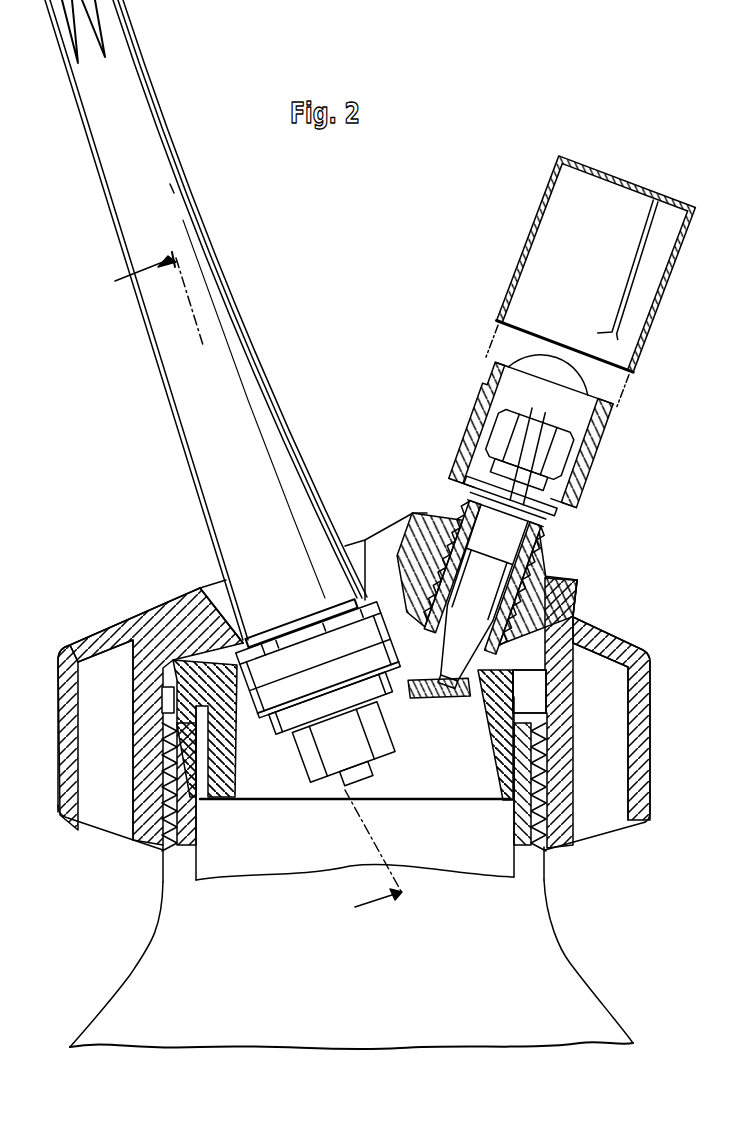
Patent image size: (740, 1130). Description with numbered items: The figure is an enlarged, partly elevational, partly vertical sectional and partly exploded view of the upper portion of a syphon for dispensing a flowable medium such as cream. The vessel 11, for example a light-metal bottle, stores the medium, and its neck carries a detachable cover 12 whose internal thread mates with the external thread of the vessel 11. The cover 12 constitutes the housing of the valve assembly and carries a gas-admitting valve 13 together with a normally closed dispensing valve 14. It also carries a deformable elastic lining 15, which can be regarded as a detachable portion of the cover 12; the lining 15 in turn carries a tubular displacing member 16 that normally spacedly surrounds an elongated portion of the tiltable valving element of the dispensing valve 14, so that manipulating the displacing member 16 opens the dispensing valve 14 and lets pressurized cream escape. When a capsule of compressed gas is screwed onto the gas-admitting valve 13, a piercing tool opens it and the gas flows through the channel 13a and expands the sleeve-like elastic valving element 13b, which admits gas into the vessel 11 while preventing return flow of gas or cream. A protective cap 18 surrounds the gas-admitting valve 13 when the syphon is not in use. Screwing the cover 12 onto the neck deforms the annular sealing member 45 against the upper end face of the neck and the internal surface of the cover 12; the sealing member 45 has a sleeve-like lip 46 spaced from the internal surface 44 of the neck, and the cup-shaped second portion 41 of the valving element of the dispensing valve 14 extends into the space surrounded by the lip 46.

The vessel 11 is at (183, 967).
The cover 12 is at (567, 637).
The gas-admitting valve 13 is at (563, 498).
The channel 13a is at (518, 543).
The sleeve-like elastic valving element 13b is at (470, 707).
The dispensing valve 14 is at (318, 638).
The deformable elastic lining 15 is at (307, 670).
The tubular displacing member 16 is at (230, 373).
The protective cap 18 is at (553, 227).
The cup-shaped second portion 41 is at (313, 752).
The internal surface of the neck 44 is at (197, 850).
The annular sealing member 45 is at (485, 672).
The sleeve-like lip 46 is at (235, 785).